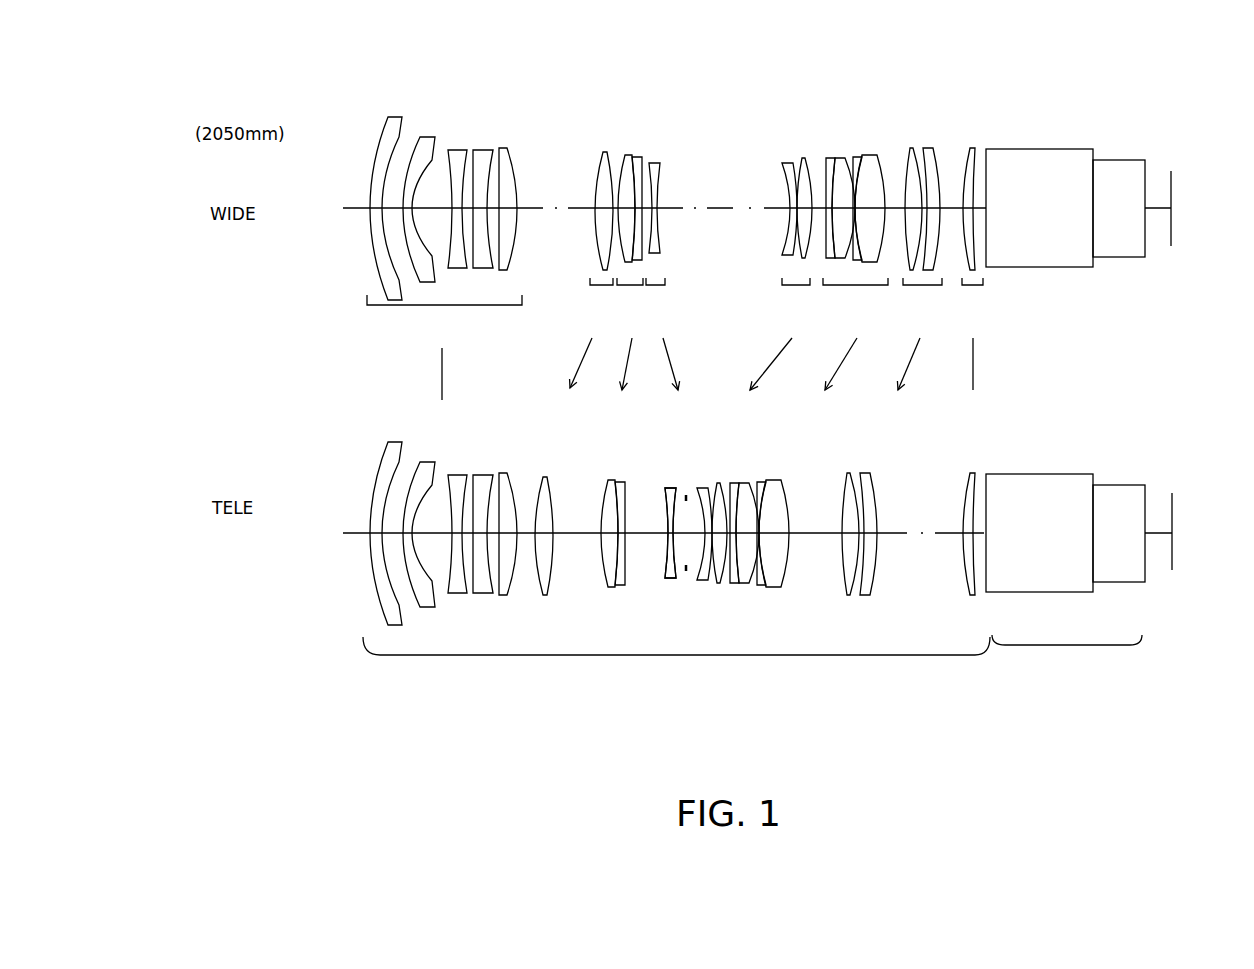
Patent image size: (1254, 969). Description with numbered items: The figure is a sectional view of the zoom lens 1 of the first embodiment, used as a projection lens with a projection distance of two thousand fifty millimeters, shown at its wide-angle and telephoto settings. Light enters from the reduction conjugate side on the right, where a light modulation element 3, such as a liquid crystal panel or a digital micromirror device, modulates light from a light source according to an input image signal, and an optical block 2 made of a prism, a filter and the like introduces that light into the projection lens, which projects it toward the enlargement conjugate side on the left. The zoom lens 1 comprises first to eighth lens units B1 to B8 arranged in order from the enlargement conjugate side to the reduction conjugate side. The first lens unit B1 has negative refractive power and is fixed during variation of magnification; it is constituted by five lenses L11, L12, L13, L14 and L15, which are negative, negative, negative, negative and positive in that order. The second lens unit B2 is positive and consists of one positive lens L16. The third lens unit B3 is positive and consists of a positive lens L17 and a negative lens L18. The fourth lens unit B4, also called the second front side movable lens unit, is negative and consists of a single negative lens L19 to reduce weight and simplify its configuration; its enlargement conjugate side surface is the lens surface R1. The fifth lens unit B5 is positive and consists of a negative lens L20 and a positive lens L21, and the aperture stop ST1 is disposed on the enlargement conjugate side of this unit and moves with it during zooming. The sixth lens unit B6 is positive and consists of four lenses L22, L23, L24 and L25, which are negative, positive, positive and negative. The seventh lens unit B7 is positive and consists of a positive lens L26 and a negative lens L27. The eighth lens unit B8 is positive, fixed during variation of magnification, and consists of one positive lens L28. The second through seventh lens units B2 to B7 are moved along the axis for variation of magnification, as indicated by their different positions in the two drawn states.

The negative lens L11 is at (395, 118).
The negative lens L12 is at (428, 137).
The negative lens L13 is at (458, 150).
The negative lens L14 is at (493, 148).
The positive lens L15 is at (508, 147).
The positive lens L16 is at (605, 152).
The positive lens L17 is at (627, 155).
The negative lens L18 is at (635, 157).
The negative lens L19 is at (657, 163).
The negative lens L20 is at (787, 163).
The positive lens L21 is at (803, 158).
The negative lens L22 is at (828, 158).
The positive lens L23 is at (840, 158).
The positive lens L24 is at (858, 157).
The negative lens L25 is at (877, 155).
The positive lens L26 is at (910, 148).
The negative lens L27 is at (923, 148).
The positive lens L28 is at (968, 148).
The first lens unit B1 is at (444, 347).
The second lens unit B2 is at (591, 333).
The third lens unit B3 is at (629, 334).
The fourth lens unit B4 is at (662, 334).
The fifth lens unit B5 is at (780, 334).
The sixth lens unit B6 is at (855, 334).
The seventh lens unit B7 is at (920, 334).
The eighth lens unit B8 is at (974, 334).
The aperture stop ST1 is at (686, 484).
The lens surface R1 is at (662, 565).
The zoom lens 1 is at (655, 660).
The optical block 2 is at (1053, 660).
The light modulation element 3 is at (1173, 503).